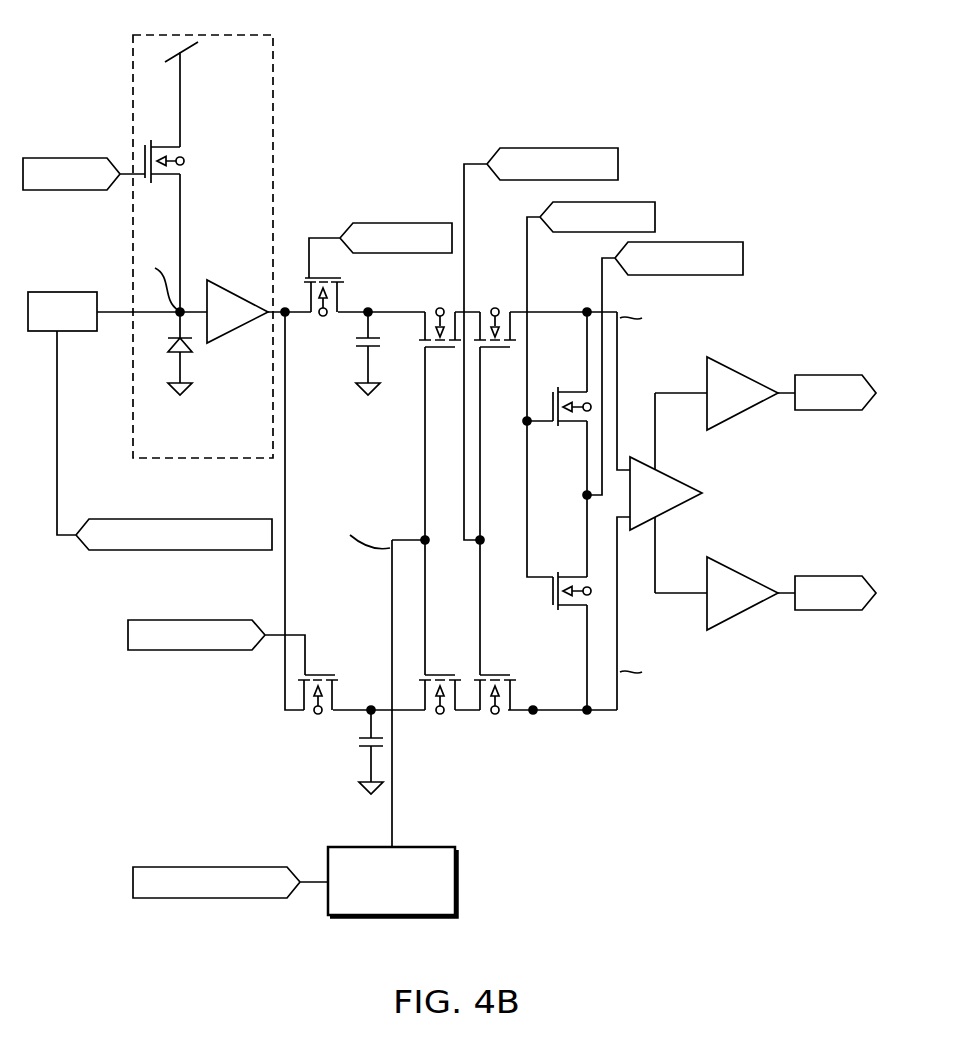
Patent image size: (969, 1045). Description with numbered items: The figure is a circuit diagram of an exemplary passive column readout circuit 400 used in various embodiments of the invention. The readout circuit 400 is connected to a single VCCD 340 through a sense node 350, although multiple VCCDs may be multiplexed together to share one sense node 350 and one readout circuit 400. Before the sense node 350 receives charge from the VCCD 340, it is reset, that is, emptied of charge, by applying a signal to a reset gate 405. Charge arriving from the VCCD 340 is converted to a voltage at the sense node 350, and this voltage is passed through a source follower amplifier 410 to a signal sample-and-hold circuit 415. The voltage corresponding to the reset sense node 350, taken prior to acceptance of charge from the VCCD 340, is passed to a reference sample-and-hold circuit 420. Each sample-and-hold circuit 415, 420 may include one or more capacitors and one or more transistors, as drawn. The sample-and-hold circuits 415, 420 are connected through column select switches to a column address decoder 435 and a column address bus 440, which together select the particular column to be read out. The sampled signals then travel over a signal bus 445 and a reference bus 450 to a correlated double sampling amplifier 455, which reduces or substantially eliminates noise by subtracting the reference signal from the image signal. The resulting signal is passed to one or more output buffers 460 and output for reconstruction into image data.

The passive column readout circuit 400 is at (752, 69).
The reset gate 405 is at (70, 158).
The source follower amplifier 410 is at (232, 339).
The signal sample-and-hold circuit 415 is at (405, 222).
The reference sample-and-hold circuit 420 is at (198, 619).
The VCCD 340 is at (78, 332).
The sense node 350 is at (152, 459).
The column address decoder 435 is at (458, 880).
The column address bus 440 is at (205, 899).
The signal bus 445 is at (620, 348).
The reference bus 450 is at (620, 700).
The correlated double sampling amplifier 455 is at (684, 482).
The output buffer 460 is at (741, 373).